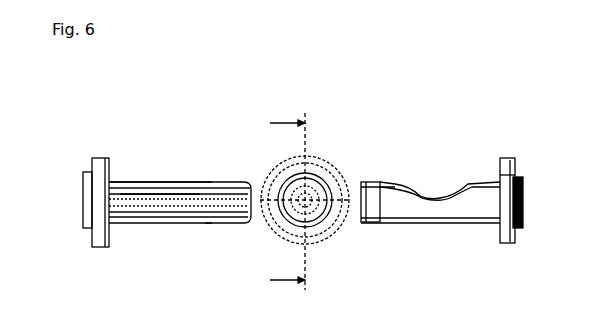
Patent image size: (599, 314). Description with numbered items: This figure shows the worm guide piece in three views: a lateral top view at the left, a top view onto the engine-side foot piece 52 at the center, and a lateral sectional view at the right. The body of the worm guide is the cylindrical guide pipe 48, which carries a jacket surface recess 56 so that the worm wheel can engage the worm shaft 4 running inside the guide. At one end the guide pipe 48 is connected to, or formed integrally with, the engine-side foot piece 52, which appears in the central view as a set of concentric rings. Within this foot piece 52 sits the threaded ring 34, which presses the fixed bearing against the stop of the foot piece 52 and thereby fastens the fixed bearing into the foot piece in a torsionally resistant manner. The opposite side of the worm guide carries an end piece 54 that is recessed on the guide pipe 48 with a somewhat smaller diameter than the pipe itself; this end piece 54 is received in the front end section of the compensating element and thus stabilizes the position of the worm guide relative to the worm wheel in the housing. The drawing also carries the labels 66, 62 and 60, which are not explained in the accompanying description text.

The worm shaft 4 is at (190, 187).
The guide pipe 48 is at (122, 187).
The thread 66 is at (153, 196).
The head 62 is at (103, 236).
The engine-side foot piece 52 is at (330, 171).
The threaded ring 34 is at (284, 218).
The end piece 54 is at (363, 183).
The jacket surface recess 56 is at (434, 198).
The assembly 60 is at (490, 55).